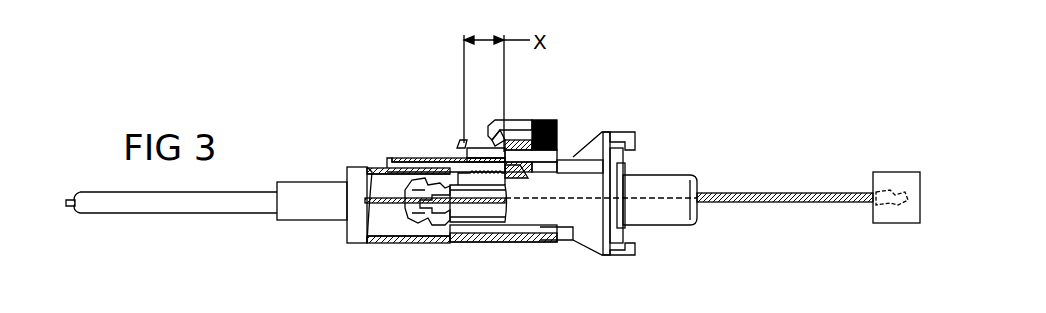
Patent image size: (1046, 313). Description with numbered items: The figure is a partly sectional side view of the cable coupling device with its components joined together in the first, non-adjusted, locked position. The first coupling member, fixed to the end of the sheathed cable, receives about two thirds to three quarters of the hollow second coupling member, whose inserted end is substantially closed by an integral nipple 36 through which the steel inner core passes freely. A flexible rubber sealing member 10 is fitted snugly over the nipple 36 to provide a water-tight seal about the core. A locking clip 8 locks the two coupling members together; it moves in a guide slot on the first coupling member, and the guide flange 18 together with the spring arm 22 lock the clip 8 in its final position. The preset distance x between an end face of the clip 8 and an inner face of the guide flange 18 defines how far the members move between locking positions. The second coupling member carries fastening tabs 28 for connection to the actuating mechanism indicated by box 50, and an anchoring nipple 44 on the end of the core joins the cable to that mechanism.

The sealing member 10 is at (403, 183).
The guide flange 18 is at (460, 143).
The locking clip 8 is at (545, 124).
The spring arm 22 is at (557, 128).
The fastening tabs 28 is at (630, 133).
The nipple 36 is at (422, 210).
The anchoring nipple 44 is at (890, 185).
The actuating or actuatable mechanism 50 is at (878, 223).